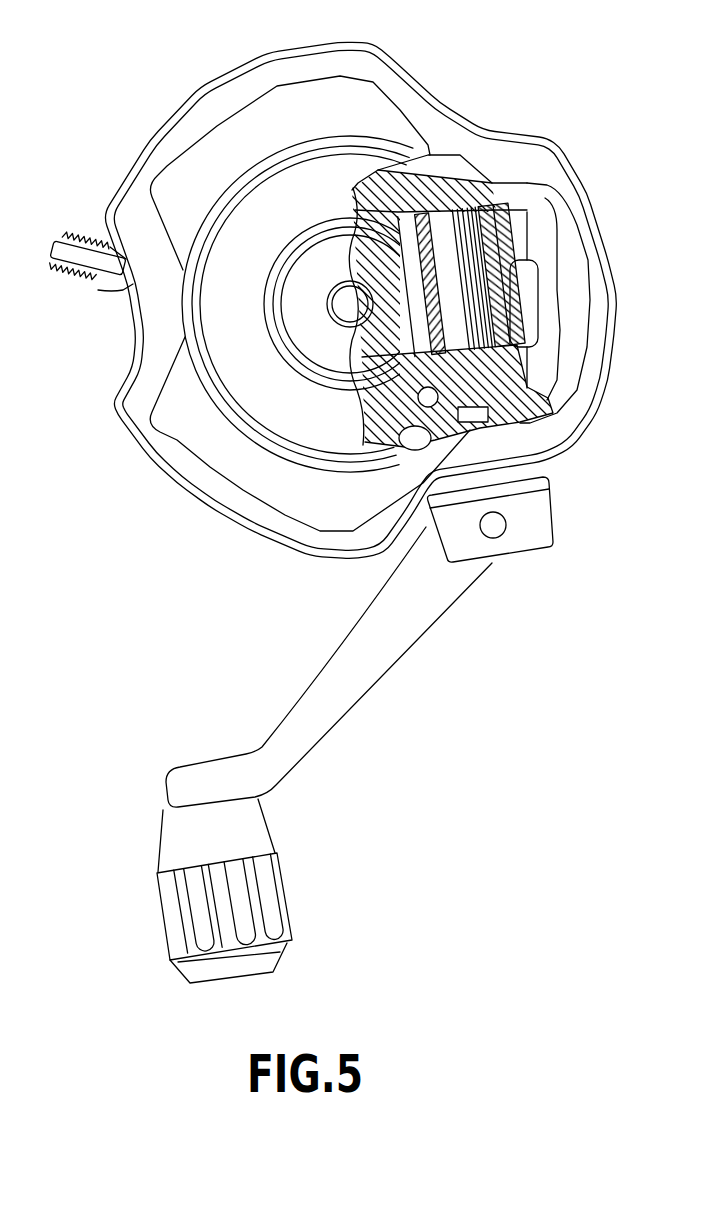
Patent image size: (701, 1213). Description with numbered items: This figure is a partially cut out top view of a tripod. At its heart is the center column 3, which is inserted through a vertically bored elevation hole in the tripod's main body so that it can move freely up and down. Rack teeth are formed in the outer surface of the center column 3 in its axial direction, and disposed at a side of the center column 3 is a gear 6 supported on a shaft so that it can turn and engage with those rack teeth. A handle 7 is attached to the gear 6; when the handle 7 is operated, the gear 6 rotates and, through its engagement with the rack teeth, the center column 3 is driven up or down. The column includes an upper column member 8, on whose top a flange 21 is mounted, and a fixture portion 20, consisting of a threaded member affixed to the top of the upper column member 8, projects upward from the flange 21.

The center column 3 is at (272, 310).
The gear 6 is at (470, 258).
The handle 7 is at (357, 677).
The upper column member 8 is at (325, 342).
The fixture portion 20 is at (349, 298).
The flange 21 is at (270, 342).